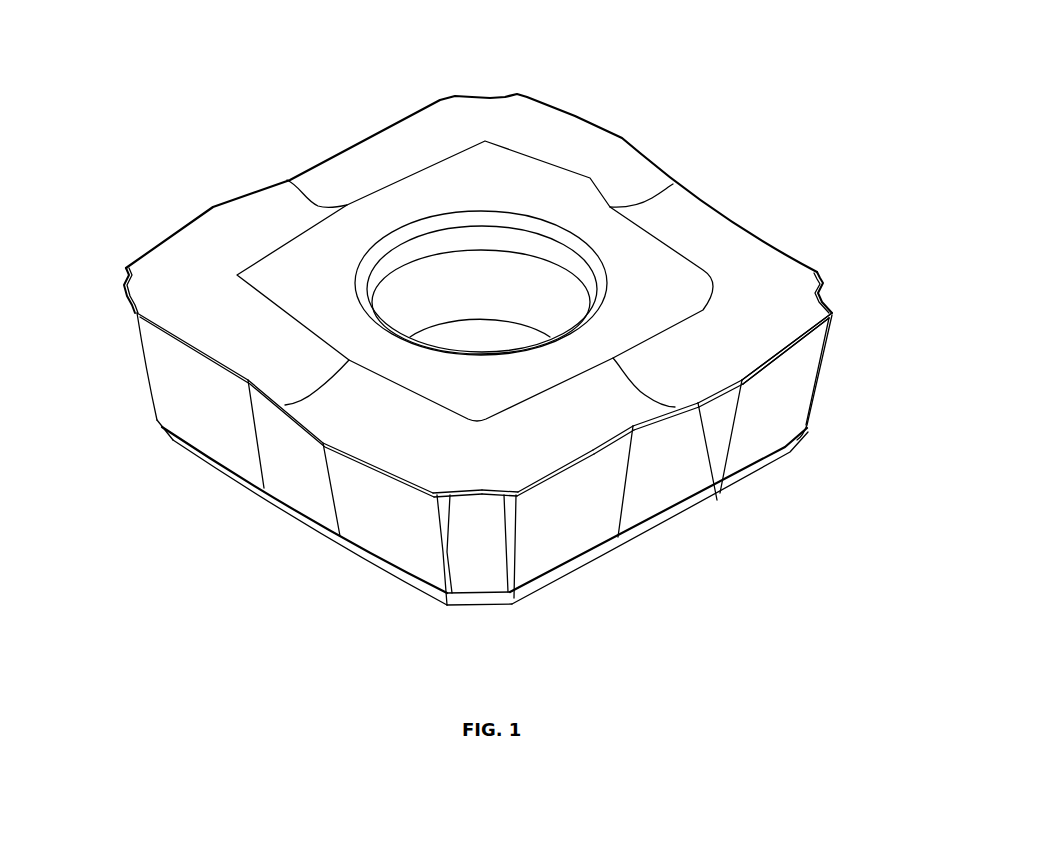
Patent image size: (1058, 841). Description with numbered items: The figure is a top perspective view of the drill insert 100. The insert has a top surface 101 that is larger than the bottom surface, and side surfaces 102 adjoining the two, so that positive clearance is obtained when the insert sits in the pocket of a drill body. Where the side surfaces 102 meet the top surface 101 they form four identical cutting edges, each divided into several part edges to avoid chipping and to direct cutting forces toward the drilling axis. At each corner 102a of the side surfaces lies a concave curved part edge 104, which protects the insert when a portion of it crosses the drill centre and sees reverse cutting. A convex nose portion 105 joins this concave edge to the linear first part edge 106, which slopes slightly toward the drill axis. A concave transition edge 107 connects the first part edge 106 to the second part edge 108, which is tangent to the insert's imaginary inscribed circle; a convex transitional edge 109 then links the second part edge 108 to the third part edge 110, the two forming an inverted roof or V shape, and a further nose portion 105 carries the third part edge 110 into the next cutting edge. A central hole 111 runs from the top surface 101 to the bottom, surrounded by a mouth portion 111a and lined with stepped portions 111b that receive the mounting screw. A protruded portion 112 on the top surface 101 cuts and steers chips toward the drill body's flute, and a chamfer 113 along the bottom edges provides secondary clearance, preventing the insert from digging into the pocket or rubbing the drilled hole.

The drill insert 100 is at (660, 65).
The top surface 101 is at (708, 232).
The side surfaces 102 is at (357, 511).
The corners 102a is at (129, 339).
The concave curved part edge 104 is at (481, 501).
The nose portion 105 is at (511, 504).
The first part edge 106 is at (593, 460).
The transition edge 107 is at (632, 437).
The second part edge 108 is at (717, 500).
The transitional edge 109 is at (746, 396).
The third part edge 110 is at (802, 360).
The hole 111 is at (430, 314).
The mouth portion 111a is at (490, 207).
The stepped portions 111b is at (510, 242).
The protruded portion 112 is at (240, 290).
The chamfer 113 is at (362, 565).